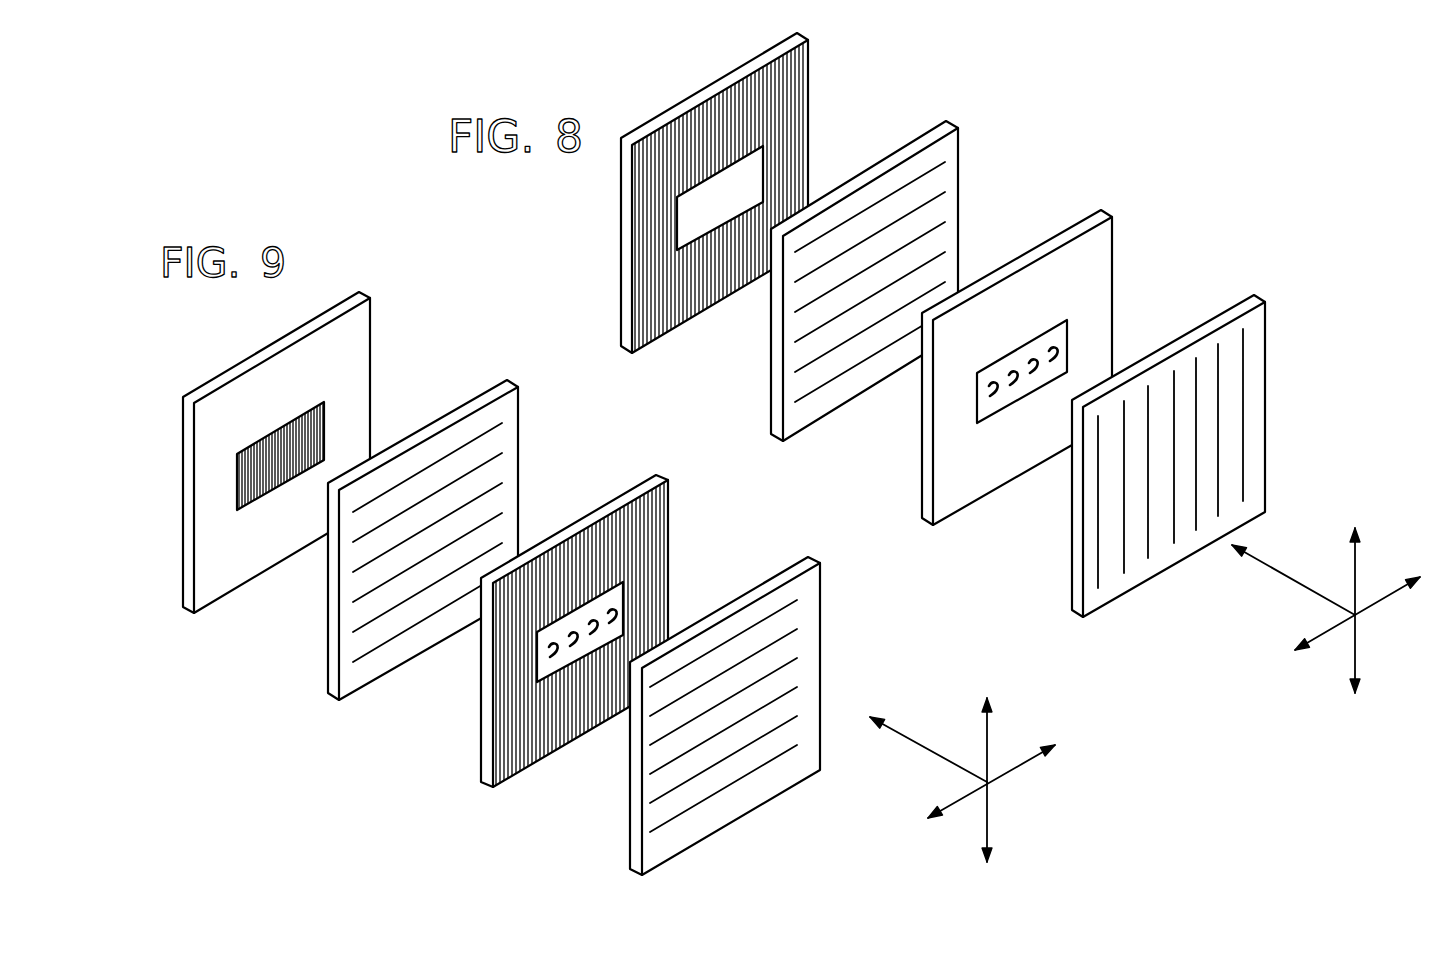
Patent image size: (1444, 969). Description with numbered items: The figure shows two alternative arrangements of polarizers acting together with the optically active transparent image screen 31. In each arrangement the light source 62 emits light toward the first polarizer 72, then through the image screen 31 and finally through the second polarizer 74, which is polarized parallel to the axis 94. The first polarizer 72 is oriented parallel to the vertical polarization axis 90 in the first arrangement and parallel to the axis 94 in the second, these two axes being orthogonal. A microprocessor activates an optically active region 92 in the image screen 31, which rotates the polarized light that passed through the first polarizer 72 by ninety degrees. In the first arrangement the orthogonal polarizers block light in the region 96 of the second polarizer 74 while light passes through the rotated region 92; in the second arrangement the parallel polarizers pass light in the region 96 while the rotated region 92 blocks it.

In FIG. 8, the region 96 is at (788, 77).
In FIG. 9, the region 96 is at (342, 345).
In FIG. 8, the optically active region 92 is at (733, 183).
In FIG. 9, the optically active region 92 is at (325, 435).
In FIG. 8, the second polarizer 74 is at (948, 182).
In FIG. 9, the second polarizer 74 is at (512, 467).
In FIG. 8, the optically active transparent image screen 31 is at (1095, 243).
In FIG. 9, the optically active transparent image screen 31 is at (657, 542).
In FIG. 8, the first polarizer 72 is at (1235, 378).
In FIG. 9, the first polarizer 72 is at (810, 645).
In FIG. 8, the vertical polarization axis 90 is at (1360, 562).
In FIG. 9, the vertical polarization axis 90 is at (990, 723).
In FIG. 8, the polarization axis 94 is at (1384, 600).
In FIG. 9, the polarization axis 94 is at (1015, 762).
In FIG. 8, the light source 62 is at (1362, 618).
In FIG. 9, the light source 62 is at (988, 793).